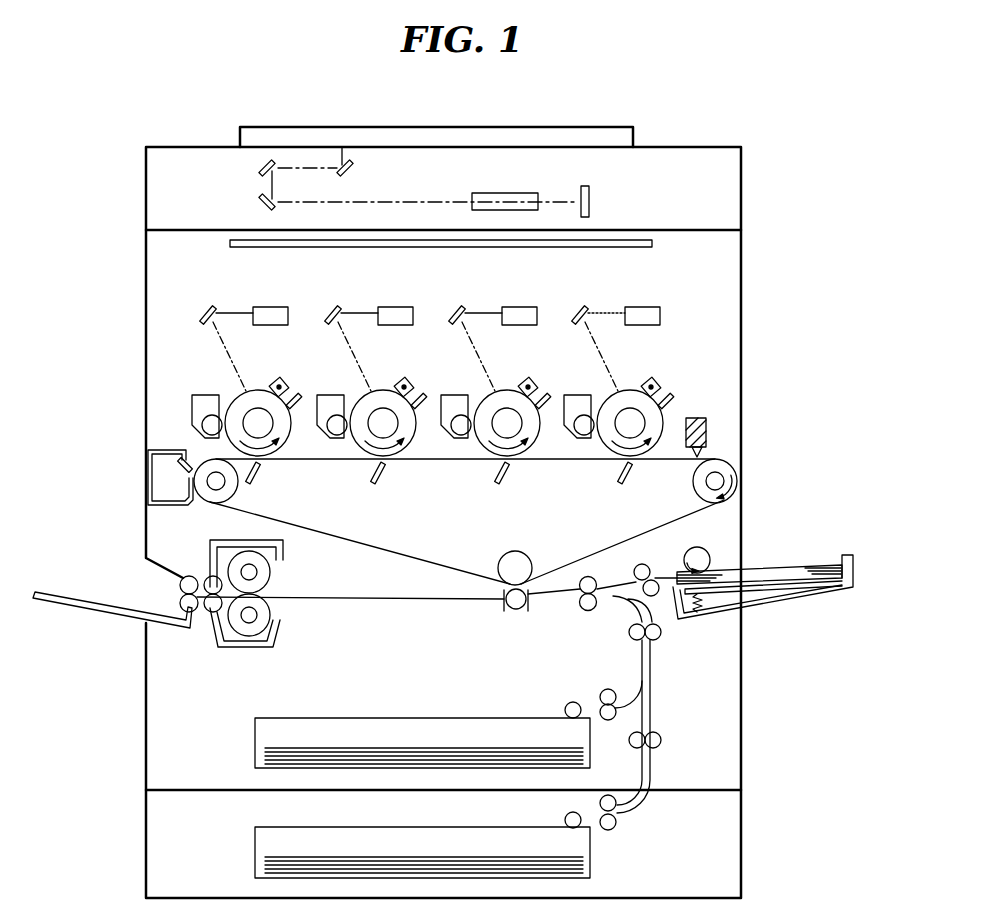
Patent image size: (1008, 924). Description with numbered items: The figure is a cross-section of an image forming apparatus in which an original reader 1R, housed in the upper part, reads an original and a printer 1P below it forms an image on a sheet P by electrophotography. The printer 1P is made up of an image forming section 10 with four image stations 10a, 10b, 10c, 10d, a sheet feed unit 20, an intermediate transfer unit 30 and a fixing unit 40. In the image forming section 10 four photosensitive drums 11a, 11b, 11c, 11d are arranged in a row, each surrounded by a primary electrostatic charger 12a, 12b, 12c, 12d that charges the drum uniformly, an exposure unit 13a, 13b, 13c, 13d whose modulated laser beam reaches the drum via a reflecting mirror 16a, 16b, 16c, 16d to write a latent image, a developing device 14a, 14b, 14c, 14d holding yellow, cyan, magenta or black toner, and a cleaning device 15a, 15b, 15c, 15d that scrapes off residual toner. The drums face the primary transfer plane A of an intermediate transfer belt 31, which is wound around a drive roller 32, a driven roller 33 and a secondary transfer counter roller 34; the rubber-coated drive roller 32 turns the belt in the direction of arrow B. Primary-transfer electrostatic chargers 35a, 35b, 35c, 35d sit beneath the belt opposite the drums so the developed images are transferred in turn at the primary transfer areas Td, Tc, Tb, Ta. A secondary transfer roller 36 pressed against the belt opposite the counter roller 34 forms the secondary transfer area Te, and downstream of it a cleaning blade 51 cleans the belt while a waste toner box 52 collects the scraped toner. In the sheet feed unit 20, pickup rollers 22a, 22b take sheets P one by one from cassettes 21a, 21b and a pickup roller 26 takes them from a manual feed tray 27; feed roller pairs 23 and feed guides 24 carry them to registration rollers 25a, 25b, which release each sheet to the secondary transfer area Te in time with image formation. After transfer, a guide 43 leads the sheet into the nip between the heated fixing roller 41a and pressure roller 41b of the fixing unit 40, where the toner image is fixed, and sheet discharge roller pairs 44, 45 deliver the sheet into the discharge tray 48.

The original reader 1R is at (742, 192).
The printer 1P is at (742, 266).
The image forming section 10 is at (686, 320).
The image station 10a is at (628, 380).
The image station 10b is at (505, 380).
The image station 10c is at (381, 380).
The image station 10d is at (256, 380).
The photosensitive drum 11a is at (630, 398).
The photosensitive drum 11b is at (507, 398).
The photosensitive drum 11c is at (383, 398).
The photosensitive drum 11d is at (258, 389).
The primary electrostatic charger 12a is at (664, 360).
The primary electrostatic charger 12b is at (541, 360).
The primary electrostatic charger 12c is at (416, 360).
The primary electrostatic charger 12d is at (284, 379).
The exposure unit 13a is at (649, 298).
The exposure unit 13b is at (526, 298).
The exposure unit 13c is at (402, 298).
The exposure unit 13d is at (275, 306).
The developing device 14a is at (579, 394).
The developing device 14b is at (456, 394).
The developing device 14c is at (332, 394).
The developing device 14d is at (217, 394).
The cleaning device 15a is at (677, 386).
The cleaning device 15b is at (554, 386).
The cleaning device 15c is at (429, 386).
The cleaning device 15d is at (298, 395).
The reflecting mirror 16a is at (596, 331).
The reflecting mirror 16b is at (473, 331).
The reflecting mirror 16c is at (350, 331).
The reflecting mirror 16d is at (211, 307).
The sheet feed unit 20 is at (736, 700).
The cassette 21a is at (254, 758).
The cassette 21b is at (254, 868).
The pickup roller 22a is at (566, 707).
The pickup roller 22b is at (566, 818).
The feed roller pair 23 is at (645, 565).
The feed guide 24 is at (655, 614).
The registration roller 25a is at (596, 580).
The registration roller 25b is at (583, 610).
The pickup roller 26 is at (701, 547).
The manual feed tray 27 is at (797, 607).
The intermediate transfer unit 30 is at (476, 502).
The intermediate transfer belt 31 is at (597, 555).
The drive roller 32 is at (722, 470).
The driven roller 33 is at (208, 503).
The secondary transfer counter roller 34 is at (524, 553).
The primary-transfer electrostatic charger 35a is at (641, 487).
The primary-transfer electrostatic charger 35b is at (518, 487).
The primary-transfer electrostatic charger 35c is at (394, 487).
The primary-transfer electrostatic charger 35d is at (256, 484).
The secondary transfer roller 36 is at (515, 610).
The fixing unit 40 is at (272, 612).
The fixing roller 41a is at (270, 591).
The pressure roller 41b is at (257, 627).
The guide 43 is at (400, 600).
The sheet discharge roller pair 44 is at (215, 613).
The sheet discharge roller pair 45 is at (180, 587).
The discharge tray 48 is at (107, 606).
The cleaning blade 51 is at (178, 460).
The waste toner box 52 is at (162, 508).
The primary transfer plane A is at (468, 463).
The arrow B is at (352, 549).
The sheet P is at (785, 567).
The primary transfer area Ta is at (663, 472).
The primary transfer area Tb is at (540, 472).
The primary transfer area Tc is at (415, 472).
The primary transfer area Td is at (268, 460).
The secondary transfer area Te is at (504, 590).